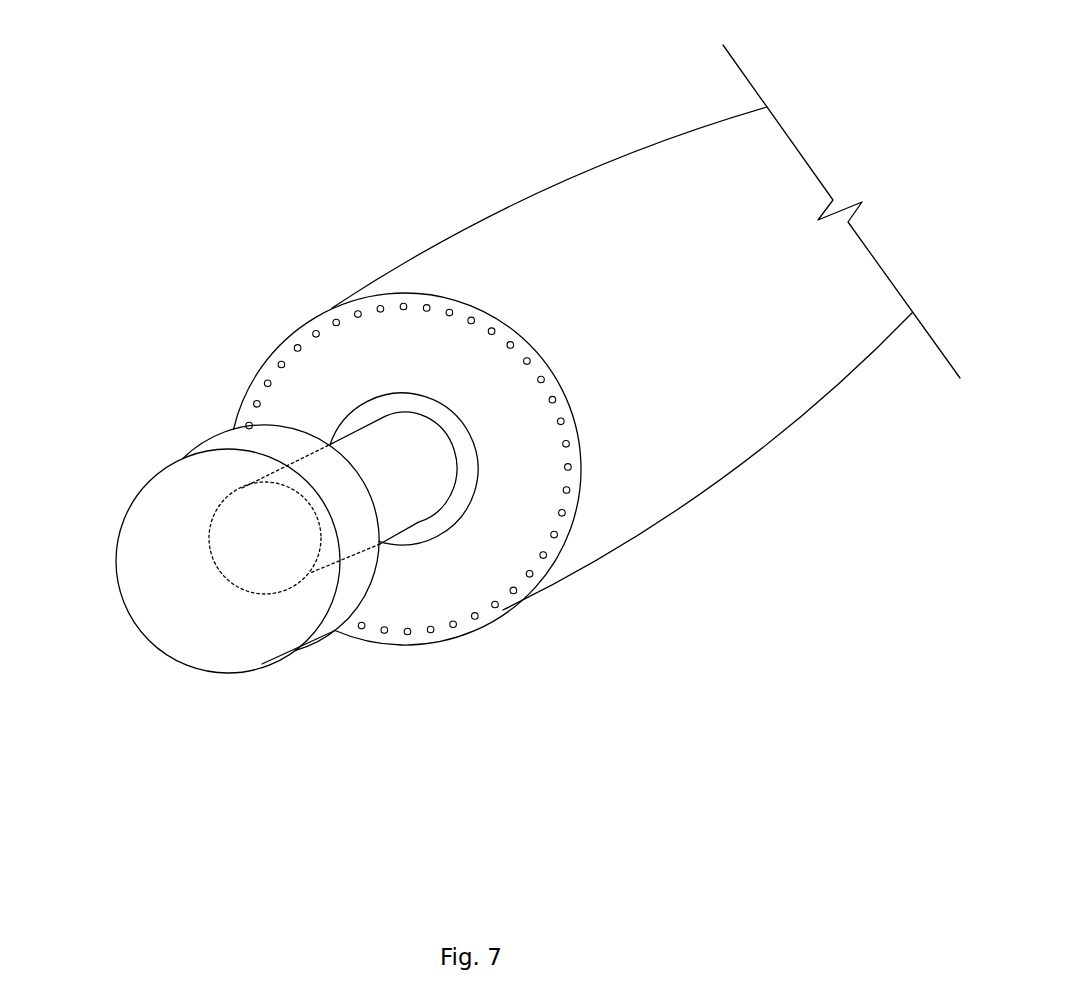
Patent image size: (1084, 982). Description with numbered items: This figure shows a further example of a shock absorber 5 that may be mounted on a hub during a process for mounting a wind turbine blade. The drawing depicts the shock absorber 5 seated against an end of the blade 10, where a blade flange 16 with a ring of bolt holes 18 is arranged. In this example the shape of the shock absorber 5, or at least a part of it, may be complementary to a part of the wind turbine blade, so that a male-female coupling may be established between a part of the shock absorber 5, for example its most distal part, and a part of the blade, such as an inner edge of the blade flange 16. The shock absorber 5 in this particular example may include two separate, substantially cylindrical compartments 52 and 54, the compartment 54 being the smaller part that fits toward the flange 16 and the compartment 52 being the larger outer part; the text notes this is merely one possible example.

The shock absorber 5 is at (501, 440).
The tubular body 10 is at (722, 167).
The blade flange 16 is at (318, 375).
The bolt holes 18 is at (560, 515).
The cylindrical compartment 52 is at (327, 620).
The cylindrical compartment 54 is at (402, 482).